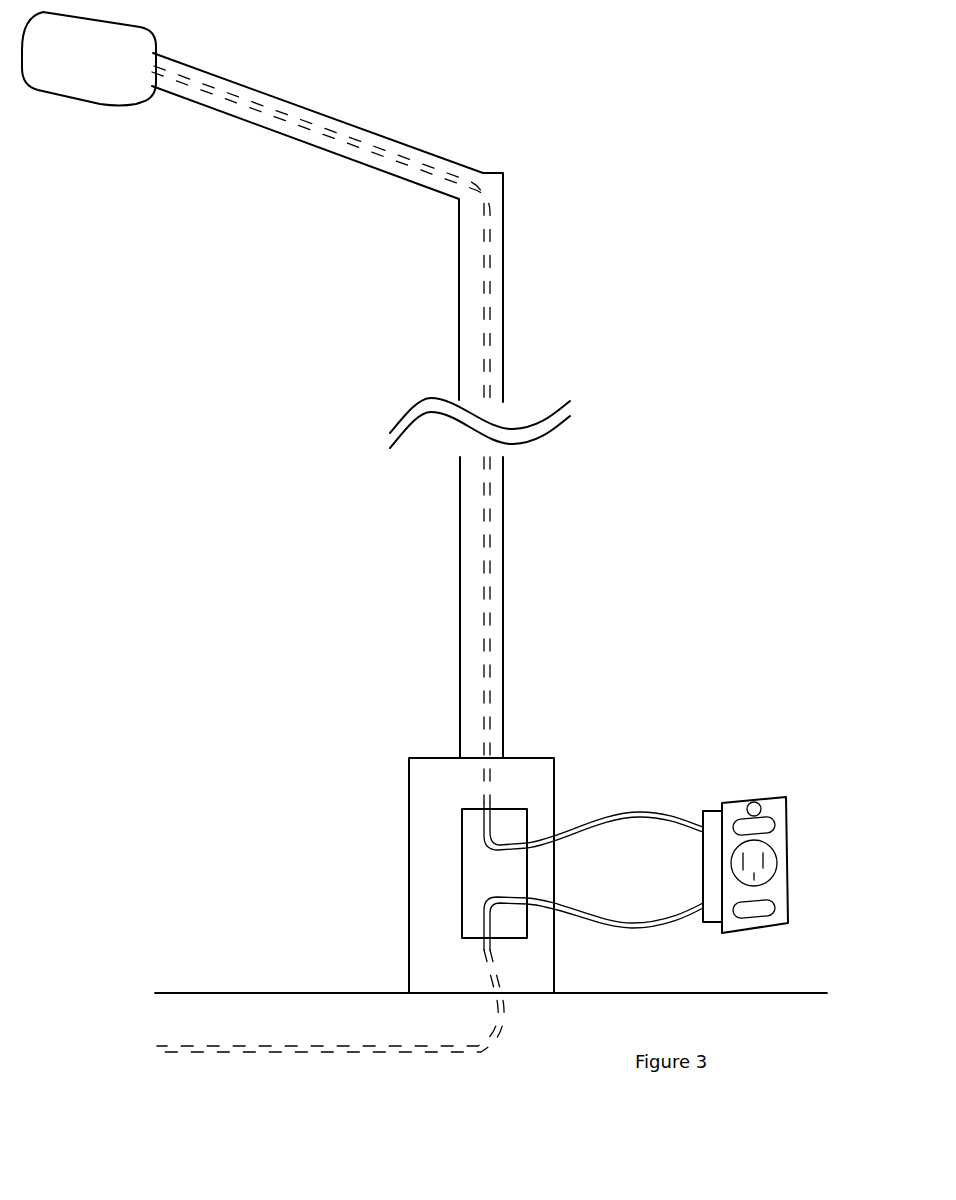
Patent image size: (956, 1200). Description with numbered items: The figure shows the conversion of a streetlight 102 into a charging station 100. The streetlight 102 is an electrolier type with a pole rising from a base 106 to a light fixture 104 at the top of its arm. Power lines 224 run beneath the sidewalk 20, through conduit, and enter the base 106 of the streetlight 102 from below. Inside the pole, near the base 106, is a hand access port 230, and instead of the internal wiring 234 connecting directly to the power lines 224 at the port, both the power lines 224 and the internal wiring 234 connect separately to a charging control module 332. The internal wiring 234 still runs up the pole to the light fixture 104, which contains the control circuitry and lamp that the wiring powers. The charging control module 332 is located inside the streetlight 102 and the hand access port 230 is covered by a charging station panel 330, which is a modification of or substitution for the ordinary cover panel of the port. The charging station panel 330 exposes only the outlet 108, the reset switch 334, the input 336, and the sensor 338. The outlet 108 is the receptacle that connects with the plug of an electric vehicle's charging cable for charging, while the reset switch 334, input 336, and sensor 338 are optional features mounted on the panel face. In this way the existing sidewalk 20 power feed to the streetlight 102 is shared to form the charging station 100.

The sidewalk 20 is at (371, 993).
The charging station 100 is at (740, 882).
The streetlight 102 is at (504, 217).
The light fixture 104 is at (110, 101).
The base 106 is at (532, 757).
The outlet 108 is at (773, 853).
The power lines 224 is at (641, 929).
The hand access port 230 is at (472, 809).
The internal wiring 234 is at (333, 141).
The charging station panel 330 is at (742, 803).
The charging control module 332 is at (703, 888).
The reset switch 334 is at (773, 825).
The input 336 is at (777, 903).
The sensor 338 is at (763, 804).